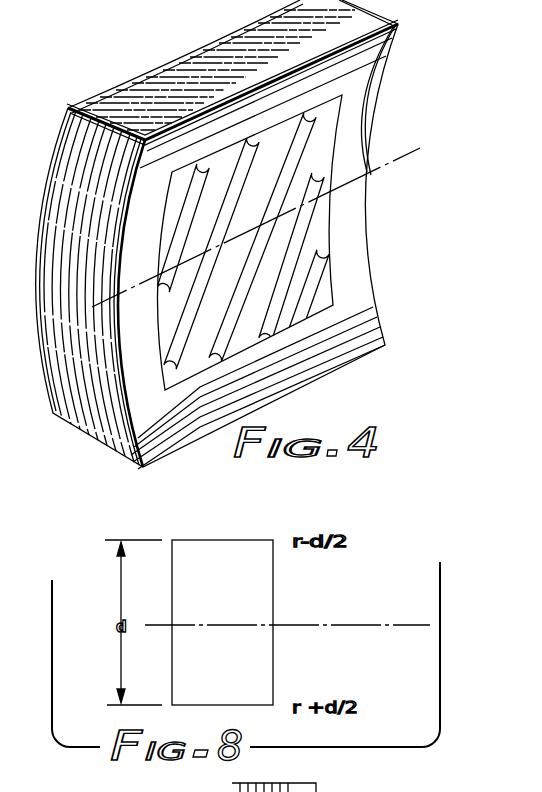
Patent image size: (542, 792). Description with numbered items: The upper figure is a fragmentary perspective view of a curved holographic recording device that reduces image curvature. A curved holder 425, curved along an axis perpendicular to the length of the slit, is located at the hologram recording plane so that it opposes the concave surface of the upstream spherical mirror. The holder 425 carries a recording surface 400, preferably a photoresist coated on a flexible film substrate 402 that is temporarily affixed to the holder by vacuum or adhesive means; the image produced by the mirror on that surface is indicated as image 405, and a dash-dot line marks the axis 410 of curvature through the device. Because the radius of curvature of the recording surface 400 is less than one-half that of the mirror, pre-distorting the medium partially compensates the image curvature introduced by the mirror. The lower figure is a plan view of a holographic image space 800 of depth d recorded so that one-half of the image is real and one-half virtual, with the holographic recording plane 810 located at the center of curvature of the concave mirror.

In FIG. 4, the recording surface 400 is at (132, 375).
In FIG. 4, the flexible film substrate 402 is at (114, 356).
In FIG. 4, the image 405 is at (317, 241).
In FIG. 4, the optical axis 410 is at (386, 156).
In FIG. 4, the curved holder 425 is at (65, 120).
In FIG. 8, the holographic image space 800 is at (283, 603).
In FIG. 8, the holographic recording plane 810 is at (362, 624).